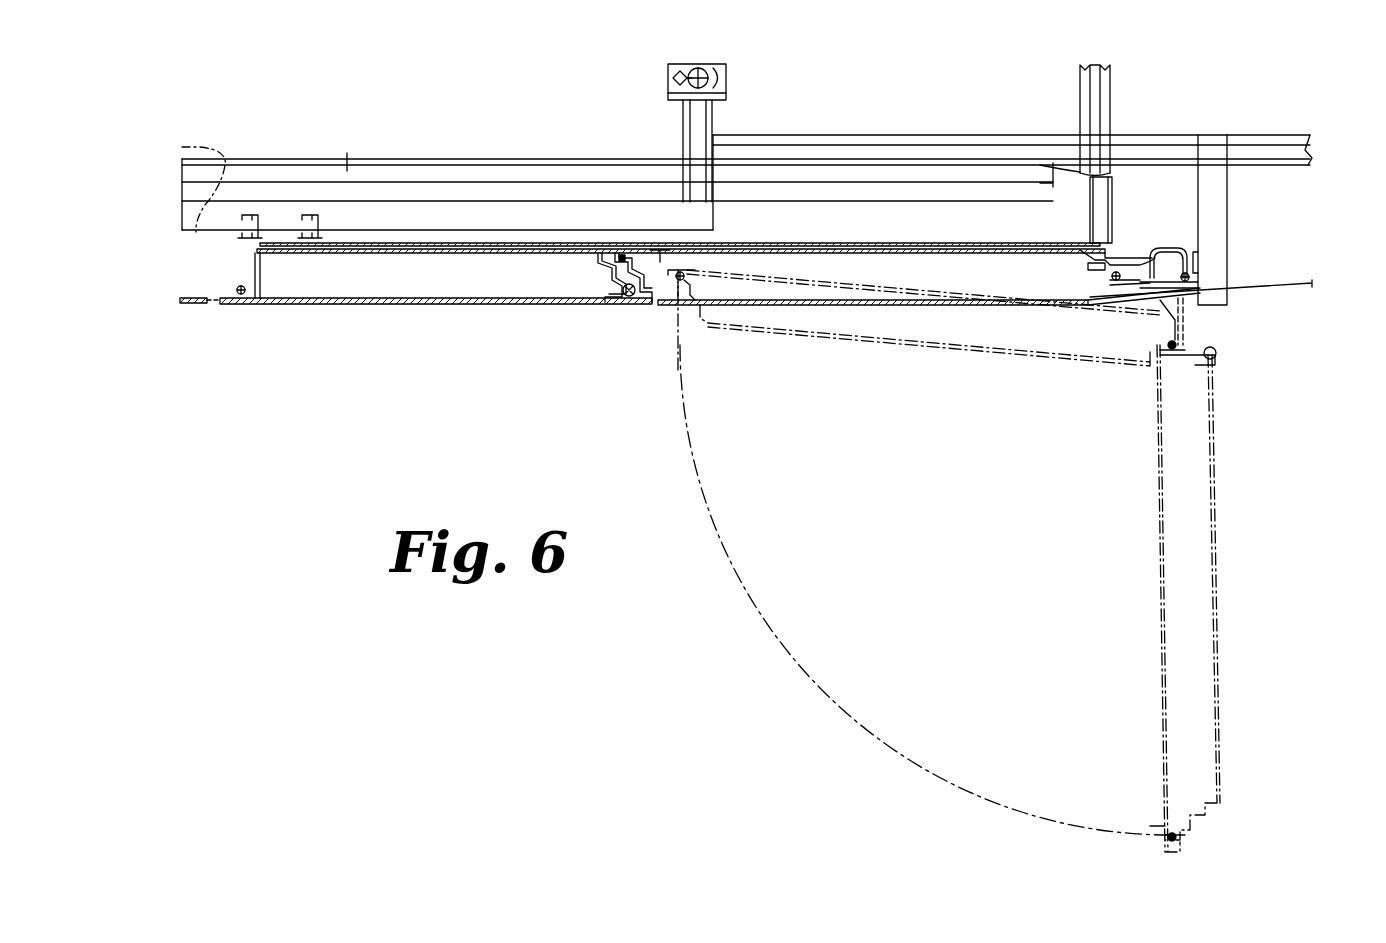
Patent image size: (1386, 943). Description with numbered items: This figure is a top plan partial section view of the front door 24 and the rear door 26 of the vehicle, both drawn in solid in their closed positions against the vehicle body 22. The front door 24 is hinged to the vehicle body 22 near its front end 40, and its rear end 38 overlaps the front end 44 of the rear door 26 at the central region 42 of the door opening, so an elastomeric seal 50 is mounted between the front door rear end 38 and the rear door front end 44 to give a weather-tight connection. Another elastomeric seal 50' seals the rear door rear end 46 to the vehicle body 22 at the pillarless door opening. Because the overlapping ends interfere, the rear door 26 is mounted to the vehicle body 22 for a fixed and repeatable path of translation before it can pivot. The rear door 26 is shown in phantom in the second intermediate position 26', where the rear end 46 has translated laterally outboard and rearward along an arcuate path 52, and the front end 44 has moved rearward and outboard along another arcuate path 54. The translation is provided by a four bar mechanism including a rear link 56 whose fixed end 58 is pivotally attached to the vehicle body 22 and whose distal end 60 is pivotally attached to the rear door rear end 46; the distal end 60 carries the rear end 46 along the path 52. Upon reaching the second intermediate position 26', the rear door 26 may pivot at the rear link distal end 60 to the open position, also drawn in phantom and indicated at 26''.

The vehicle body 22 is at (1278, 286).
The front door 24 is at (388, 310).
The rear door 26 is at (901, 320).
The second intermediate position 26' is at (923, 335).
The open position 26'' is at (978, 598).
The rear end of the front door 38 is at (625, 305).
The front end of the front door 40 is at (240, 305).
The central region 42 is at (642, 65).
The front end of the rear door 44 is at (662, 252).
The rear end of the rear door 46 is at (1087, 250).
The elastomeric seal 50 is at (598, 295).
The elastomeric seal 50' is at (1250, 376).
The arcuate path 52 is at (1165, 310).
The arcuate path 54 is at (650, 265).
The rear link 56 is at (1190, 246).
The fixed end 58 is at (1190, 278).
The distal end 60 is at (1118, 275).